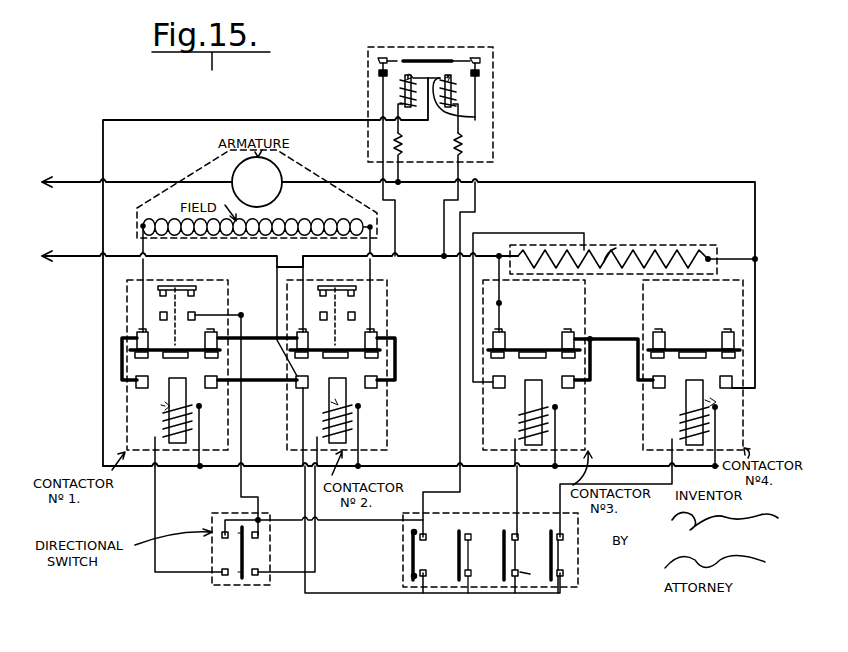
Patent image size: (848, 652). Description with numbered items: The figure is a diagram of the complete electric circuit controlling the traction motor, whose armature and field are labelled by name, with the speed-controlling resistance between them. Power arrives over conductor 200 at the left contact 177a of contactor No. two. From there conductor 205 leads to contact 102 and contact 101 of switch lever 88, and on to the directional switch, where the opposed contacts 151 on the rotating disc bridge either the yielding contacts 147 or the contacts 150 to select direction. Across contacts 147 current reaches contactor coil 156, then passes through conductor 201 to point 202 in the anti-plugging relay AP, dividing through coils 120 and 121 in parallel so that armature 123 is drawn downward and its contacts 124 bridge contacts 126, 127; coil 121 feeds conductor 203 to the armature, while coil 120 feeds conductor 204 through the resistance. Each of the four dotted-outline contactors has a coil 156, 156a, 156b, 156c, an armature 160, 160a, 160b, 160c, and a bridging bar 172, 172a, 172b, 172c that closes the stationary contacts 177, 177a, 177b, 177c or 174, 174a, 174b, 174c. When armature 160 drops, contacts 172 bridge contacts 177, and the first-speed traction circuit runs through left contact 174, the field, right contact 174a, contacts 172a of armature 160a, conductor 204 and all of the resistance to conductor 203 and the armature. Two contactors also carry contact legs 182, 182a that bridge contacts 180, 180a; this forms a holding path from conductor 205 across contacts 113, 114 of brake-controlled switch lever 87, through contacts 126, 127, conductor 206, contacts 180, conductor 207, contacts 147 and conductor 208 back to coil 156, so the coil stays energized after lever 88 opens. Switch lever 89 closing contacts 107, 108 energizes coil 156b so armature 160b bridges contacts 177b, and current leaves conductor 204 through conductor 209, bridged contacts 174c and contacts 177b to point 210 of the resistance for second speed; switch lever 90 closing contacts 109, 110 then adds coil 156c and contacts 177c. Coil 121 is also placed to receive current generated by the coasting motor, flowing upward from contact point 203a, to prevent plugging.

The anti-plugging relay AP is at (504, 55).
The relay coil 120 is at (466, 91).
The relay coil 121 is at (392, 93).
The armature 123 is at (424, 58).
The contacts 124 is at (475, 56).
The contact 126 is at (480, 72).
The contact 127 is at (378, 72).
The point 202 is at (476, 117).
The conductor 203 is at (706, 192).
The contact point 203a is at (400, 180).
The conductor 204 is at (430, 236).
The conductor 205 is at (303, 483).
The conductor 206 is at (380, 148).
The conductor 207 is at (240, 483).
The conductor 208 is at (158, 497).
The conductor 209 is at (596, 300).
The point 210 is at (584, 250).
The conductor 200 is at (84, 258).
The conductor 201 is at (105, 437).
The contact legs 182 is at (190, 288).
The contact legs 182a is at (330, 286).
The contacts 180 is at (189, 312).
The contacts 180a is at (351, 312).
The stationary contact 174 is at (200, 333).
The stationary contacts 174a is at (372, 330).
The stationary contacts 174b is at (566, 330).
The stationary contacts 174c is at (726, 330).
The bar 172 is at (128, 352).
The bar 172a is at (385, 352).
The bar 172b is at (540, 355).
The bar 172c is at (700, 355).
The armature 160 is at (175, 358).
The armature 160a is at (335, 358).
The armature 160b is at (535, 358).
The armature 160c is at (695, 358).
The stationary contacts 177 is at (200, 385).
The stationary contacts 177a is at (378, 390).
The stationary contacts 177b is at (500, 388).
The stationary contacts 177c is at (660, 388).
The contactor coil 156 is at (165, 405).
The contactor coil 156a is at (350, 402).
The contactor coil 156b is at (545, 397).
The contactor coil 156c is at (712, 402).
The yielding contacts 147 is at (230, 572).
The contacts 150 is at (258, 572).
The opposed contacts 151 is at (256, 530).
The switch lever 87 is at (410, 555).
The switch lever 88 is at (457, 556).
The switch lever 89 is at (515, 556).
The switch lever 90 is at (555, 552).
The contact 101 is at (465, 535).
The contact 102 is at (480, 568).
The contact 107 is at (512, 535).
The contact 108 is at (534, 577).
The contact 109 is at (563, 530).
The contact 110 is at (563, 574).
The contact 113 is at (410, 532).
The contact 114 is at (410, 575).